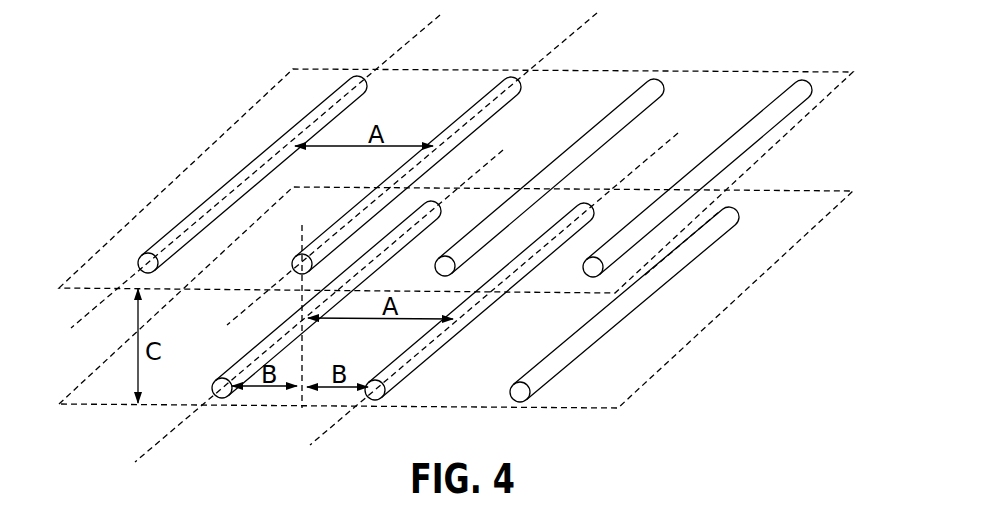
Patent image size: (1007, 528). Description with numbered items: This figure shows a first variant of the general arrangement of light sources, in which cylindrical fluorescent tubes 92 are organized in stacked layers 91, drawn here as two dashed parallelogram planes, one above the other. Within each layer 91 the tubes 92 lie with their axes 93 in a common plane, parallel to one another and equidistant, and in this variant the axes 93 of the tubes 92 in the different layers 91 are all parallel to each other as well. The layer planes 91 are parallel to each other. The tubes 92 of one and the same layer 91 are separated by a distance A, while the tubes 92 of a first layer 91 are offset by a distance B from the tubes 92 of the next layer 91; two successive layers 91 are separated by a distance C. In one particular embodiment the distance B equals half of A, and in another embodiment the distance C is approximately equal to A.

The stacked layer 91 is at (138, 166).
The fluorescent tube 92 is at (330, 113).
The axis of the tube 93 is at (408, 41).